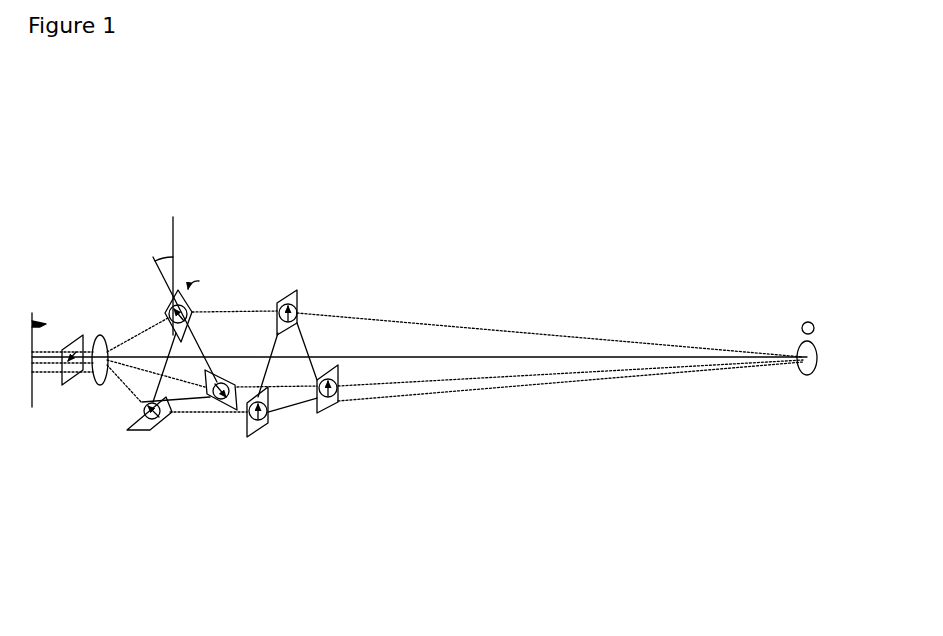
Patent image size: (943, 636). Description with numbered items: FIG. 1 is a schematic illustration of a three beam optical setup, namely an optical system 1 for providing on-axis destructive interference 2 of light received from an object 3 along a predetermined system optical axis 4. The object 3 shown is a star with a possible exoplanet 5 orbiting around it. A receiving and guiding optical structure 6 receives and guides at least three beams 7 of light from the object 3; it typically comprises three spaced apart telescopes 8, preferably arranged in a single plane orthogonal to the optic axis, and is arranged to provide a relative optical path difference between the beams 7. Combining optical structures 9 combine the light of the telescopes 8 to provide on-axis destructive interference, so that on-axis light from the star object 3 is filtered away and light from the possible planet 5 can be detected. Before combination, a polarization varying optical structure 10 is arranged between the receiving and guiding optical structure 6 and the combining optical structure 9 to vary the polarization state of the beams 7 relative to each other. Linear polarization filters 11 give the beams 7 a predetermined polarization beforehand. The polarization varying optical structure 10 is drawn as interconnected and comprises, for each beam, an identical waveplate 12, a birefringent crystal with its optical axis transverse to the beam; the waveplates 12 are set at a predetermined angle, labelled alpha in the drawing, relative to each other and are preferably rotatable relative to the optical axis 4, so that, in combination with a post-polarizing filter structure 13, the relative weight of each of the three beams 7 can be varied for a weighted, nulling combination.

The optical system 1 is at (123, 603).
The on-axis destructive interference 2 is at (32, 313).
The object 3 is at (803, 373).
The system optical axis 4 is at (553, 358).
The exoplanet 5 is at (805, 323).
The receiving and guiding optical structure 6 is at (294, 371).
The beams 7 is at (477, 328).
The telescopes 8 is at (301, 286).
The combining optical structure 9 is at (98, 385).
The polarization varying optical structure 10 is at (198, 374).
The linear polarization filters 11 is at (337, 365).
The waveplate 12 is at (190, 302).
The post-polarizing filter structure 13 is at (62, 385).